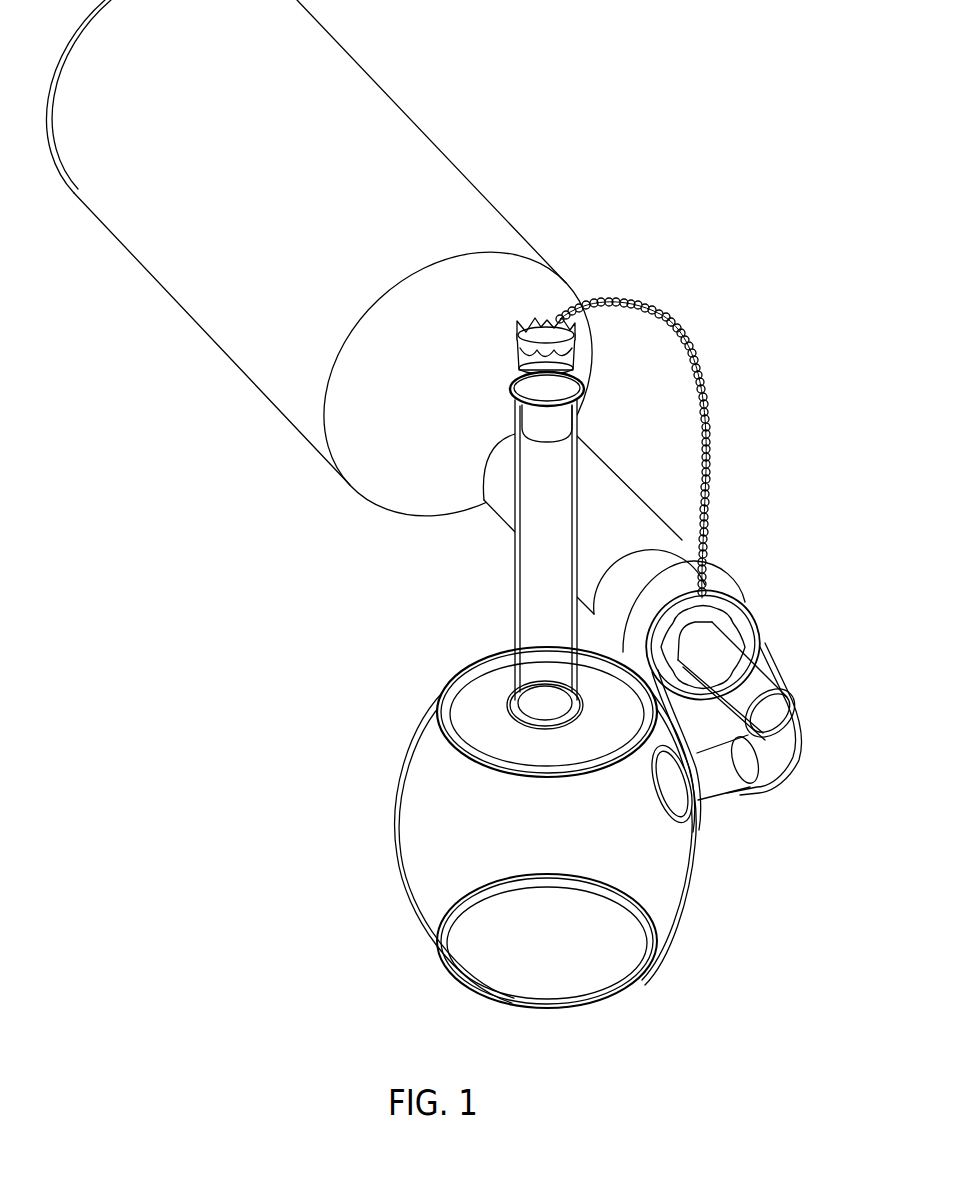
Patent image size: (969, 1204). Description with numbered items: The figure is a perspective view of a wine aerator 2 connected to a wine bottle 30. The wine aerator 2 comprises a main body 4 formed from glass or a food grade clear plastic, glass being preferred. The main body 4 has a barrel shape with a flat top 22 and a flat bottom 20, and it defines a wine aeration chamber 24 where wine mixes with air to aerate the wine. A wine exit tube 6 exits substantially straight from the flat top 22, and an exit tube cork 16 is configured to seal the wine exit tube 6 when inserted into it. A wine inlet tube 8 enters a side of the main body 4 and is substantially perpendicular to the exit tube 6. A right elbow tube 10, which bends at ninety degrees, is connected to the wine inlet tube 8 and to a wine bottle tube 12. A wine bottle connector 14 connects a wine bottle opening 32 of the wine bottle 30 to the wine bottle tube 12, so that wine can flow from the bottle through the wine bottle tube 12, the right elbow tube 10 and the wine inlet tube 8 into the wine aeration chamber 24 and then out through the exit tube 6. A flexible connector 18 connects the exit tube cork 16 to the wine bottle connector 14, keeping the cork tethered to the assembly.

The wine aerator 2 is at (545, 650).
The main body 4 is at (397, 855).
The wine exit tube 6 is at (515, 592).
The wine inlet tube 8 is at (730, 798).
The right elbow tube 10 is at (789, 767).
The wine bottle tube 12 is at (777, 670).
The wine bottle connector 14 is at (727, 578).
The exit tube cork 16 is at (541, 323).
The flexible connector 18 is at (676, 332).
The flat bottom 20 is at (525, 960).
The flat top 22 is at (468, 703).
The wine aeration chamber 24 is at (555, 850).
The wine bottle 30 is at (427, 130).
The wine bottle opening 32 is at (679, 549).